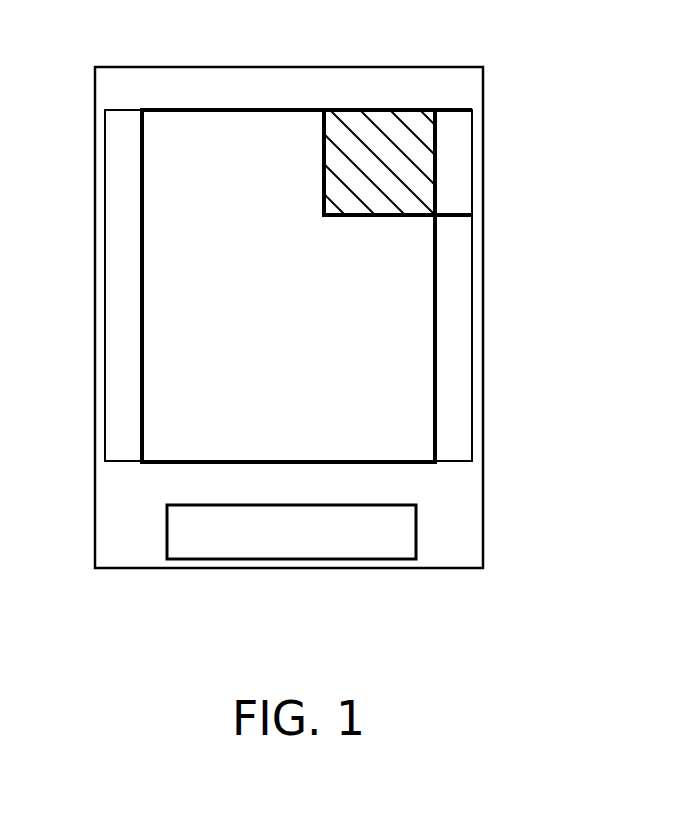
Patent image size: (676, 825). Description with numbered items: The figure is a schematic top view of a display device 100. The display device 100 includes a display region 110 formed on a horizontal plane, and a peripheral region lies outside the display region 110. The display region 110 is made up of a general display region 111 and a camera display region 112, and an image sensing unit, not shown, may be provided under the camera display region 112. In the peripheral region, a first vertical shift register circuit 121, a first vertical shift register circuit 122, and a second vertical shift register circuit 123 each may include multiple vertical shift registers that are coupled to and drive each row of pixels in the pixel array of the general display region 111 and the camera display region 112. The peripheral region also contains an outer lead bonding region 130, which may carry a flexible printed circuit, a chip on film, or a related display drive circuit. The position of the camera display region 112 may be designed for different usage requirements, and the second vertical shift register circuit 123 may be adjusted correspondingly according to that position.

The display device 100 is at (484, 96).
The display region 110 is at (262, 98).
The general display region 111 is at (199, 127).
The camera display region 112 is at (369, 127).
The first vertical shift register circuit 121 is at (114, 133).
The first vertical shift register circuit 122 is at (462, 310).
The second vertical shift register circuit 123 is at (461, 156).
The outer lead bonding region 130 is at (416, 533).